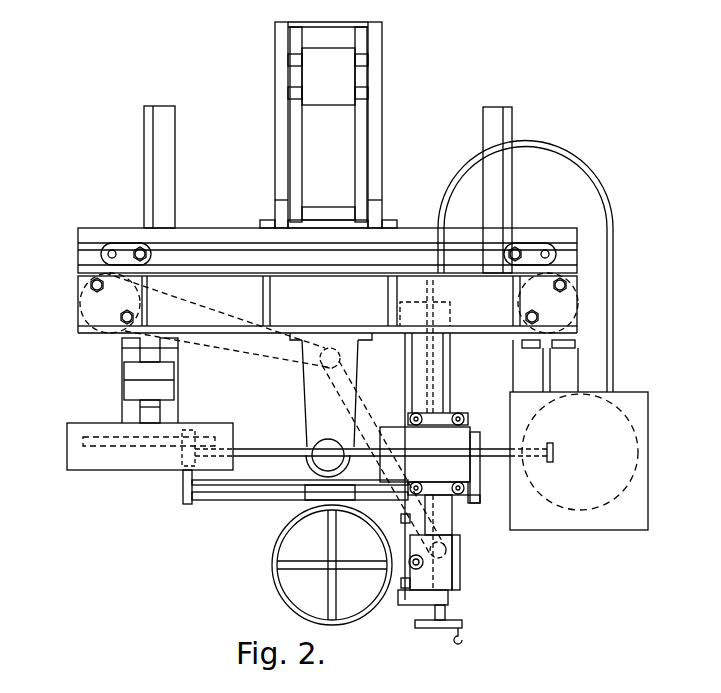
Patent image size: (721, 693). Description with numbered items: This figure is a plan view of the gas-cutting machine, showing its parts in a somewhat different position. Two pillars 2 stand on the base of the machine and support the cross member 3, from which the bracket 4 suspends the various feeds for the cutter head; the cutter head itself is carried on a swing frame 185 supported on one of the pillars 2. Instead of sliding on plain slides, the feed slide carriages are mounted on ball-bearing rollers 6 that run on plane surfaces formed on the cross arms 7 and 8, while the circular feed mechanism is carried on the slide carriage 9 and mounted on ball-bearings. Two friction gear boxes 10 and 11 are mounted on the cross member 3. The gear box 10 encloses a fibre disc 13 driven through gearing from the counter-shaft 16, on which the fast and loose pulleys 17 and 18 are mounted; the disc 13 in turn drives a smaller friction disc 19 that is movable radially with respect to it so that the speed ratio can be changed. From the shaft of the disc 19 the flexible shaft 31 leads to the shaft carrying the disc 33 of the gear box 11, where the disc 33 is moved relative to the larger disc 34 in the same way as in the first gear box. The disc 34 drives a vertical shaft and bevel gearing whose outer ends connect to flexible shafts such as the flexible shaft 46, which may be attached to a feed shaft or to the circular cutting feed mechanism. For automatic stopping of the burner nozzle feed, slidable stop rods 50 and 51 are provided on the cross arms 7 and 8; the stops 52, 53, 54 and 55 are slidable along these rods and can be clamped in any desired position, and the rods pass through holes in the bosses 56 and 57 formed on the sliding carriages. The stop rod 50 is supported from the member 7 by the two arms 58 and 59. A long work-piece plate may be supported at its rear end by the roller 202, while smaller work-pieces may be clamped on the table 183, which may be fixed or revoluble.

The pillars 2 is at (82, 299).
The cross member 3 is at (202, 320).
The bracket 4 is at (318, 383).
The ball-bearing rollers 6 is at (413, 415).
The cross arm 7 is at (226, 486).
The cross arm 8 is at (446, 368).
The slide carriage 9 is at (456, 591).
The friction gear box 10 is at (105, 463).
The friction gear box 11 is at (535, 518).
The disc 13 is at (84, 441).
The counter-shaft 16 is at (152, 412).
The fast pulley 17 is at (137, 371).
The loose pulley 18 is at (142, 394).
The friction disc 19 is at (195, 445).
The flexible shaft 31 is at (268, 446).
The disc 33 is at (555, 447).
The disc 34 is at (589, 507).
The flexible shaft 46 is at (559, 152).
The stop rod 50 is at (245, 500).
The stop rod 51 is at (405, 372).
The stop 52 is at (401, 500).
The stop 53 is at (480, 500).
The stop 54 is at (401, 519).
The stop 55 is at (422, 606).
The boss 56 is at (448, 500).
The boss 57 is at (408, 564).
The arm 58 is at (183, 479).
The arm 59 is at (481, 485).
The table 183 is at (298, 587).
The swing frame 185 is at (222, 312).
The roller 202 is at (328, 125).